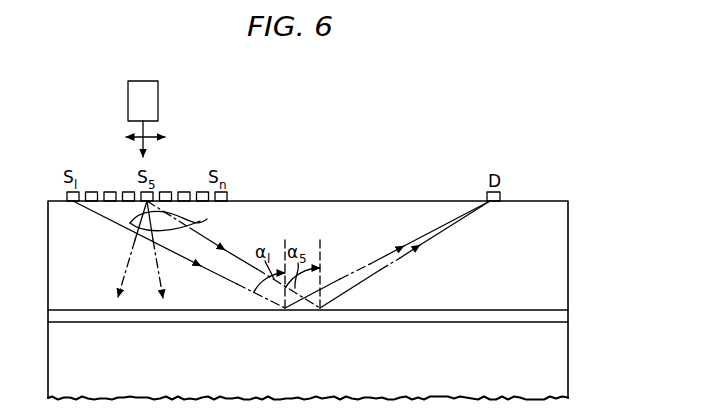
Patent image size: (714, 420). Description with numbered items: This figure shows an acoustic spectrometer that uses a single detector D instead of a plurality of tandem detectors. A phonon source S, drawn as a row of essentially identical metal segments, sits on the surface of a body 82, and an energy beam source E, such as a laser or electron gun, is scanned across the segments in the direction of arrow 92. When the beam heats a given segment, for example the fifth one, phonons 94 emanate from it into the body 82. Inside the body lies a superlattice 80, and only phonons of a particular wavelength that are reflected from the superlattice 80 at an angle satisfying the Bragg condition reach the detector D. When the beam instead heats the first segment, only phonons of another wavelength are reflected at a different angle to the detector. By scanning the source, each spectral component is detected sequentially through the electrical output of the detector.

The superlattice 80 is at (48, 318).
The body 82 is at (578, 190).
The arrow indicating scanning direction 92 is at (172, 136).
The phonons 94 is at (205, 220).